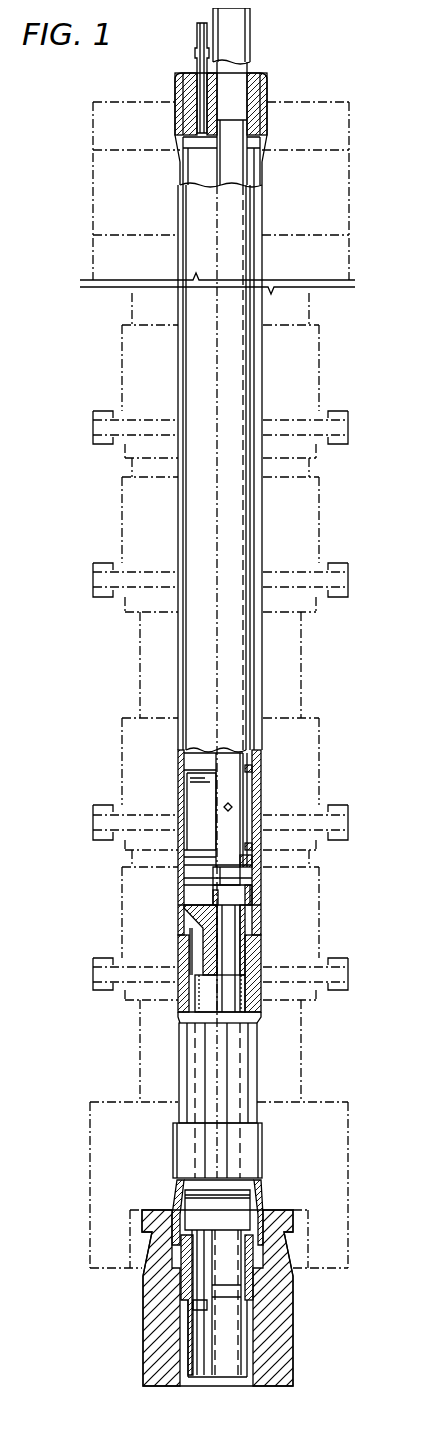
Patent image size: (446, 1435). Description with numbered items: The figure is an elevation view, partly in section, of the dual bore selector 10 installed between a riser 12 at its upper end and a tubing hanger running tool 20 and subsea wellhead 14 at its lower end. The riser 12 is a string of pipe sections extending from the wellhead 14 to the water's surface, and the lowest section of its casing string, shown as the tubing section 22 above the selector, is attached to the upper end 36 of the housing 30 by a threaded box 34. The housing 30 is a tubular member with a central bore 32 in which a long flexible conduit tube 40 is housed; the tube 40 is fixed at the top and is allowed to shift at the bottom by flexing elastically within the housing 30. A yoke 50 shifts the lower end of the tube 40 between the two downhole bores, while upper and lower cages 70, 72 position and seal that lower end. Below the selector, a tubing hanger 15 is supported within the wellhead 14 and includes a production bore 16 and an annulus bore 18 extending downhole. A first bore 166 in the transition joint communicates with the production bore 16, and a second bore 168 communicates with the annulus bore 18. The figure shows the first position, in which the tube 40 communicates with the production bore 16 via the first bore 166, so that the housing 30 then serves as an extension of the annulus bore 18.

The bore selector 10 is at (262, 390).
The riser 12 is at (250, 29).
The subsea wellhead 14 is at (293, 1322).
The tubing hanger 15 is at (187, 1280).
The production bore 16 is at (227, 1354).
The annulus bore 18 is at (198, 1350).
The tubing hanger running tool 20 is at (248, 1075).
The upper tubing section 22 is at (232, 72).
The housing 30 is at (262, 545).
The central bore 32 is at (248, 760).
The threaded box 34 is at (263, 115).
The upper end of housing 36 is at (260, 173).
The conduit member (tube) 40 is at (243, 677).
The yoke 50 is at (192, 792).
The upper cage 70 is at (250, 867).
The lower cage 72 is at (250, 883).
The first bore 166 is at (232, 940).
The second bore 168 is at (200, 928).